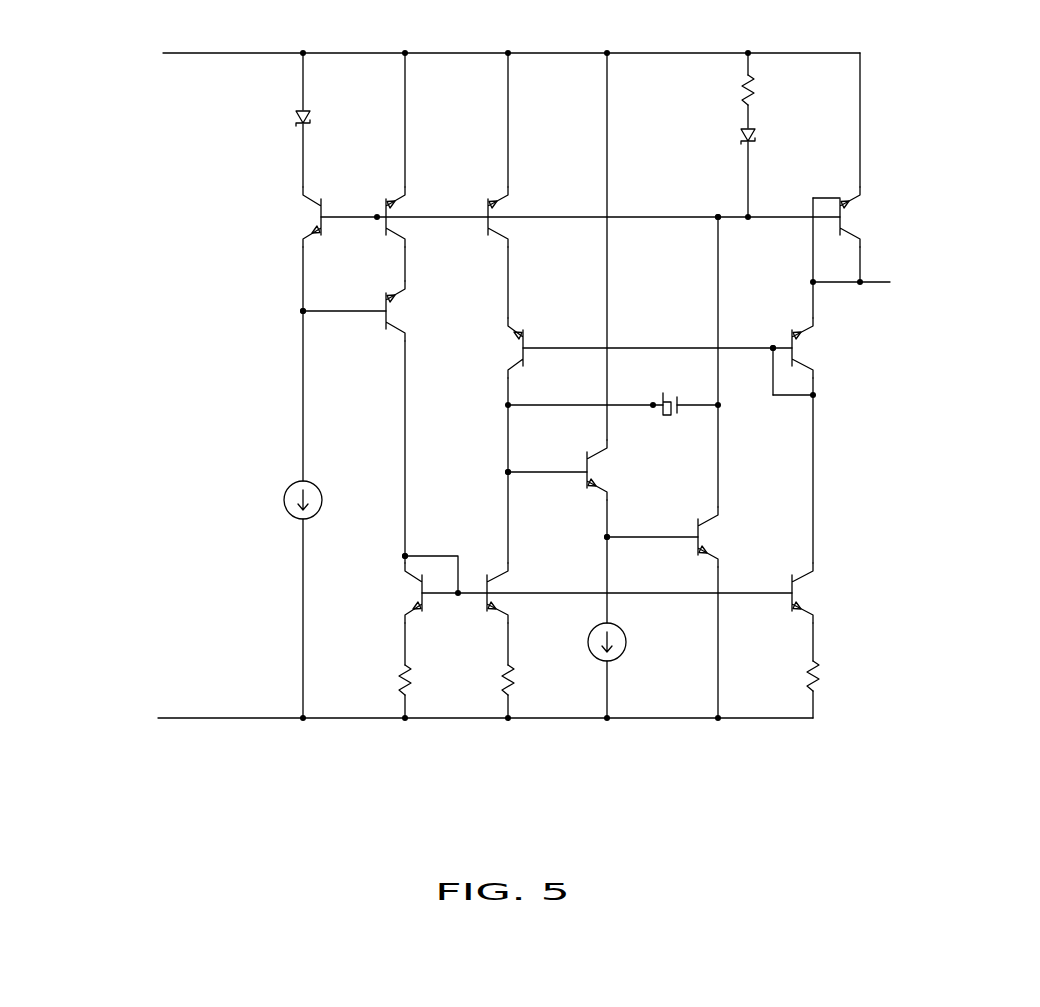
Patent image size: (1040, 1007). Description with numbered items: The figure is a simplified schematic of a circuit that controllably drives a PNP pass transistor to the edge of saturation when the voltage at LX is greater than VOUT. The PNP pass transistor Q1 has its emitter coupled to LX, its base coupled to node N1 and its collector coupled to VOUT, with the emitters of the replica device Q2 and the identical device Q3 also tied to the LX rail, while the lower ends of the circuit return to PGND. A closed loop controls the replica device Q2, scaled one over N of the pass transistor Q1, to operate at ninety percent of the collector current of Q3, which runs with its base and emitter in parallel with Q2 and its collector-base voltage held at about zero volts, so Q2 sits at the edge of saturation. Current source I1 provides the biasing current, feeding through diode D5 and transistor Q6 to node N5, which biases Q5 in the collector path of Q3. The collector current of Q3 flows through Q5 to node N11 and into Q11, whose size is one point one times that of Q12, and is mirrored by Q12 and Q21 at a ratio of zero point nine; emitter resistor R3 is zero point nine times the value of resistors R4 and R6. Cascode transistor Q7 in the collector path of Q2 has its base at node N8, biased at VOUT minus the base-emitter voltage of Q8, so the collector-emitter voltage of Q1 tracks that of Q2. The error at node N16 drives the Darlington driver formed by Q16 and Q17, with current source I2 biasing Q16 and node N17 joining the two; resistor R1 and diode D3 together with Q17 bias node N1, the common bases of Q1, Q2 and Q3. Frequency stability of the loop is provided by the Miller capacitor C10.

The LX" node LX is at (175, 31).
The VOUT" node VOUT is at (977, 260).
The power ground PGND is at (120, 715).
The diode D5 is at (279, 117).
The diode D3 is at (724, 139).
The resistor R1 is at (767, 88).
The resistor R3 is at (435, 679).
The resistor R4 is at (525, 679).
The resistor R6 is at (830, 675).
The current source I1 is at (282, 500).
The current source I2 is at (623, 642).
The Miller capacitor C10 is at (677, 421).
The transistor Q6 is at (294, 217).
The transistor Q3 is at (413, 217).
The replica device Q2 is at (518, 217).
The PNP pass transistor Q1 is at (864, 217).
The transistor Q5 is at (413, 311).
The cascode transistor Q7 is at (500, 348).
The transistor Q8 is at (816, 348).
The transistor Q16 is at (621, 470).
The transistor Q17 is at (732, 537).
The transistor Q11 is at (367, 595).
The transistor Q12 is at (523, 594).
The transistor Q21 is at (828, 595).
The node N5 is at (319, 300).
The node N1 is at (700, 207).
The node N8 is at (756, 336).
The node N16 is at (532, 462).
The node N17 is at (631, 526).
The node N11 is at (429, 545).